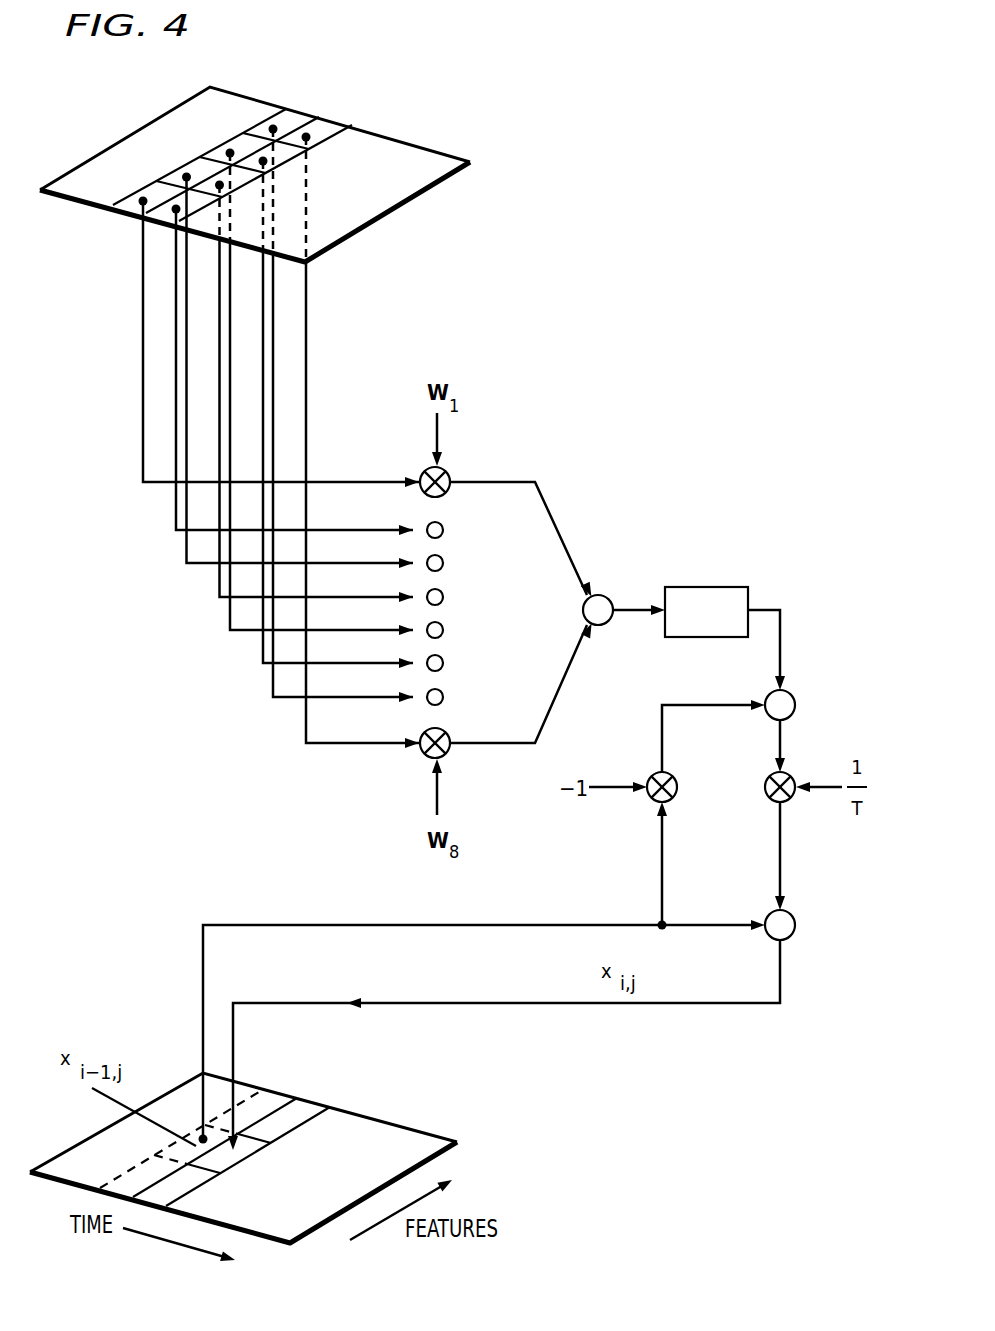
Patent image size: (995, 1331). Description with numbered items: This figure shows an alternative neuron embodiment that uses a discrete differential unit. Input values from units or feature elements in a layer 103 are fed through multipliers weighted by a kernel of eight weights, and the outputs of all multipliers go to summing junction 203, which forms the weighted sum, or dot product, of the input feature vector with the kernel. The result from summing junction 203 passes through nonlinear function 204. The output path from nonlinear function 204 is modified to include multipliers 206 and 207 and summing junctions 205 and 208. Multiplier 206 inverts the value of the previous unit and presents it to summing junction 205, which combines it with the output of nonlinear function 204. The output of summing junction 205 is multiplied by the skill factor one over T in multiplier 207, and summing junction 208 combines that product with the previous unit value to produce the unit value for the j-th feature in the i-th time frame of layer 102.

The layer 103 is at (528, 167).
The summing junction 203 is at (601, 596).
The nonlinear function 204 is at (712, 587).
The summing junction 205 is at (769, 696).
The multiplier 206 is at (673, 799).
The multiplier 207 is at (769, 779).
The summing junction 208 is at (769, 914).
The layer 102 is at (517, 1148).